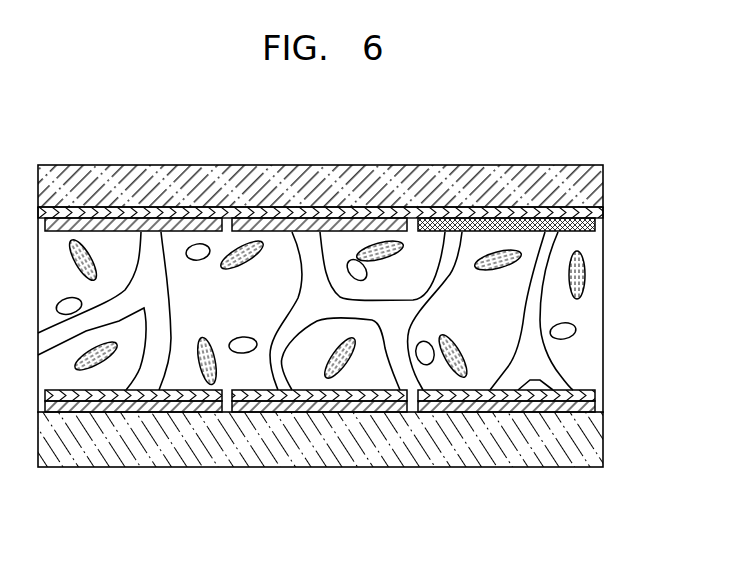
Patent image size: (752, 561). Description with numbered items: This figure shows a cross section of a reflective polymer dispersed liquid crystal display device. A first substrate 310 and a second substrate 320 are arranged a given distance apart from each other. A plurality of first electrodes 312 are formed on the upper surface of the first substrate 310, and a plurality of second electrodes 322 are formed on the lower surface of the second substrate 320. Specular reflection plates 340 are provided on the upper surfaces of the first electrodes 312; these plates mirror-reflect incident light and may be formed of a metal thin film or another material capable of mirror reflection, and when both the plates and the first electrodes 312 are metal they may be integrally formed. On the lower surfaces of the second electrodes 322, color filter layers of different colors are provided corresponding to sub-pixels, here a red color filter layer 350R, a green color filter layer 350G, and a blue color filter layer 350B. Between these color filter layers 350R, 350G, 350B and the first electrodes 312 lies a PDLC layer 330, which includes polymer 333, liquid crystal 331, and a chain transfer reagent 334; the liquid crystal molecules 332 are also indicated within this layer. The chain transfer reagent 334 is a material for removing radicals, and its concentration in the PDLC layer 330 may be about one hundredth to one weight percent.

The first substrate 310 is at (600, 442).
The first electrodes 312 is at (175, 410).
The second substrate 320 is at (600, 189).
The second electrodes 322 is at (600, 213).
The PDLC layer 330 is at (391, 311).
The liquid crystal 331 is at (597, 248).
The liquid crystal molecules 332 is at (585, 280).
The polymer 333 is at (533, 318).
The chain transfer reagent 334 is at (565, 330).
The specular reflection plates 340 is at (101, 397).
The red color filter layer 350R is at (139, 224).
The green color filter layer 350G is at (324, 224).
The blue color filter layer 350B is at (510, 224).